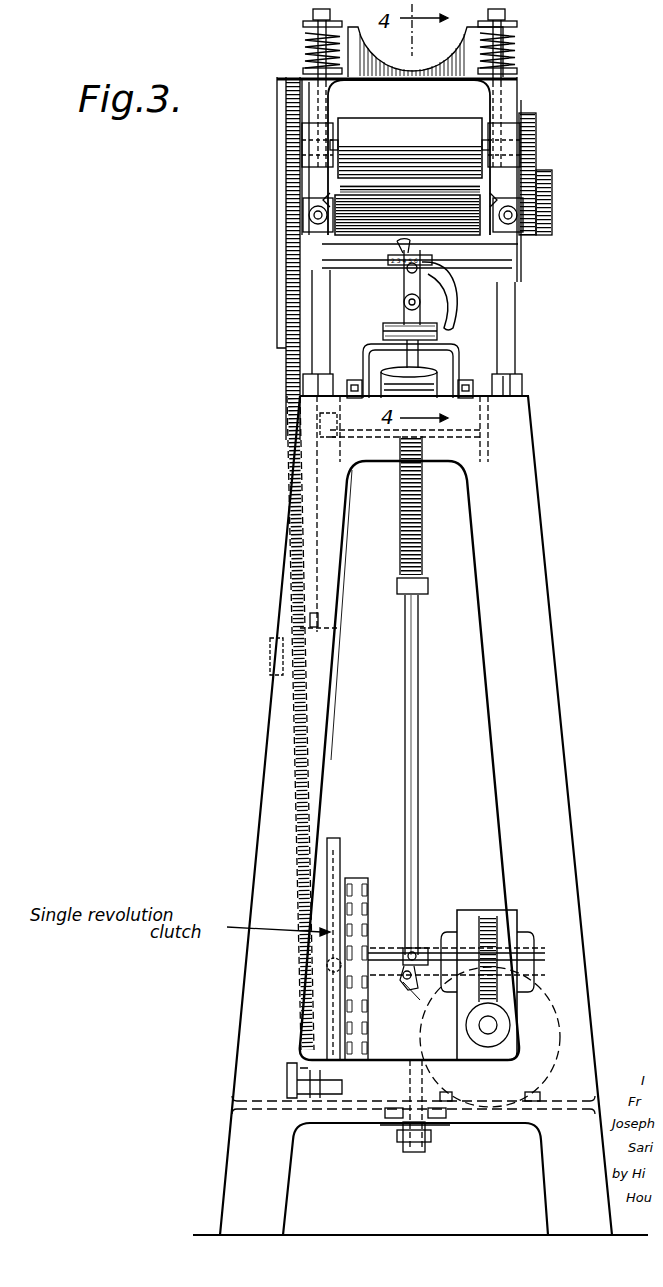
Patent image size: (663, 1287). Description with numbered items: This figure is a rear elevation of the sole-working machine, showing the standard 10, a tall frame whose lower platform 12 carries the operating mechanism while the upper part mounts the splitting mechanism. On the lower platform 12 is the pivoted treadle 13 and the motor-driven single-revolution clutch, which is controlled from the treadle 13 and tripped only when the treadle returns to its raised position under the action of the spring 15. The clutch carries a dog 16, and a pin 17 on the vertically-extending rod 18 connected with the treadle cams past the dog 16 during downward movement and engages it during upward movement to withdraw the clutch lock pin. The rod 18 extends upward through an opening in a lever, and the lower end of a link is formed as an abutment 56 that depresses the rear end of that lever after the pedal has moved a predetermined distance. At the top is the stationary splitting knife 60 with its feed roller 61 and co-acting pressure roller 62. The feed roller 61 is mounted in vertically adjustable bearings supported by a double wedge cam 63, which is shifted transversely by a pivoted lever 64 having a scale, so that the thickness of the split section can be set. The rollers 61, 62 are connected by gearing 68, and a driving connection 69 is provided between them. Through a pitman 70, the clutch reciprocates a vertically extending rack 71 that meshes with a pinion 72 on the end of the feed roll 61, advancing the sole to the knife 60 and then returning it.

The standard 10 is at (515, 348).
The lower platform 12 is at (263, 1107).
The pivoted treadle 13 is at (427, 1133).
The spring 15 is at (421, 541).
The dog 16 is at (421, 957).
The pin 17 is at (413, 950).
The vertically-extending rod 18 is at (445, 360).
The abutment 56 is at (398, 328).
The stationary splitting knife 60 is at (407, 205).
The feed roller 61 is at (292, 258).
The pressure roller 62 is at (422, 130).
The double wedge cam 63 is at (500, 263).
The pivoted lever 64 is at (440, 296).
The gearing 68 is at (545, 238).
The driving connection 69 is at (537, 152).
The pitman 70 is at (296, 783).
The rack 71 is at (290, 406).
The pinion 72 is at (292, 218).